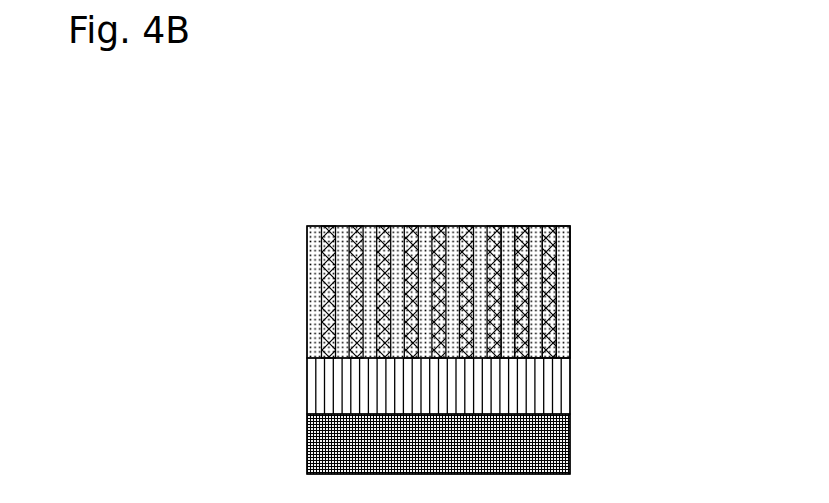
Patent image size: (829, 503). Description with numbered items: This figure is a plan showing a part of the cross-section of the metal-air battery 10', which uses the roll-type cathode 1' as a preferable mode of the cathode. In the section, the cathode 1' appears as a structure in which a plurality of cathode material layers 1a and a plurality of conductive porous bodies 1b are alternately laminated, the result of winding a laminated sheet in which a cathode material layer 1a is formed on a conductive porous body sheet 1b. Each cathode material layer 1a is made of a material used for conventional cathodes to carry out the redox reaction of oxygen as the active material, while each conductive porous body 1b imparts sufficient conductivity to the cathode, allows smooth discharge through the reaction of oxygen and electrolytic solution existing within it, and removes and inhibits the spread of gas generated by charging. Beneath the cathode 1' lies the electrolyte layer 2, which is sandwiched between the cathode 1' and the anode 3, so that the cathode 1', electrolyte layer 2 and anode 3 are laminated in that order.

The metal-air battery 10' is at (438, 261).
The cathode 1' is at (477, 244).
The cathode material layer 1a is at (500, 227).
The conductive porous body 1b is at (324, 227).
The electrolyte layer 2 is at (562, 385).
The anode 3 is at (570, 441).